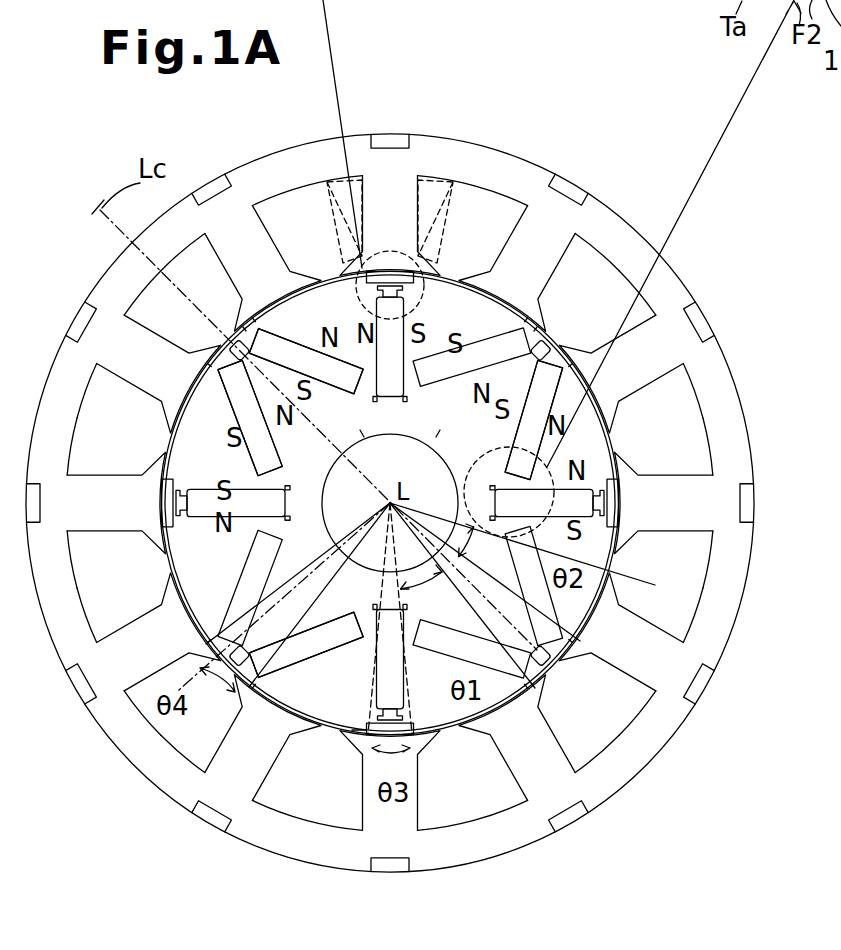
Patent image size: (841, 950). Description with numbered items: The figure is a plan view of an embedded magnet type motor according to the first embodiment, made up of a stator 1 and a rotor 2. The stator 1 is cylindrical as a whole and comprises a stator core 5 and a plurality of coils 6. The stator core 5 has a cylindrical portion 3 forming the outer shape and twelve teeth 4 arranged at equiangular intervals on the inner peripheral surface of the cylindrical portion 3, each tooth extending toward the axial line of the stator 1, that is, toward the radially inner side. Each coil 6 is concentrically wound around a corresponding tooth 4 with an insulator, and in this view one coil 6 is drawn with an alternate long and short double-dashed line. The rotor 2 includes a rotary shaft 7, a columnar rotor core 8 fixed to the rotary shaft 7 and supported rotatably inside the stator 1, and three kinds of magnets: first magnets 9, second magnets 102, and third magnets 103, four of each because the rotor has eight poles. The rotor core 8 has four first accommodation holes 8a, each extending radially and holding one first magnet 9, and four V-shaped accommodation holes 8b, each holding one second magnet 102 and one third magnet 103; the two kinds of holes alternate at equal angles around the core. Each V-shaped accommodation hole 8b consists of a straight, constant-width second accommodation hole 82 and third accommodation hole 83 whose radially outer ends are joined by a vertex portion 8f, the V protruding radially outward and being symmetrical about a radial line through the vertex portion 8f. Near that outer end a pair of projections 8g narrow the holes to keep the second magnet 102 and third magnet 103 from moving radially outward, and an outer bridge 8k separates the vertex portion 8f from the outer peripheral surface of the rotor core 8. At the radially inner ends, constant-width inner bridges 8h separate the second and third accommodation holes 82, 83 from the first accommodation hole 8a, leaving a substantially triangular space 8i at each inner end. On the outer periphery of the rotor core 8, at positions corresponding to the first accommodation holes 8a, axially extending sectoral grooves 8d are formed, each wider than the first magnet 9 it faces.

The stator 1 is at (700, 290).
The rotor 2 is at (610, 440).
The cylindrical portion 3 is at (738, 549).
The teeth 4 is at (392, 168).
The stator core 5 is at (505, 152).
The coil 6 is at (463, 186).
The rotary shaft 7 is at (326, 540).
The rotor core 8 is at (441, 687).
The first accommodation hole 8a is at (412, 293).
The V-shaped accommodation hole 8b is at (345, 386).
The groove 8d is at (355, 728).
The vertex portion 8f is at (237, 352).
The projection 8g is at (235, 318).
The inner bridge 8h is at (438, 430).
The space 8i is at (362, 430).
The outer bridge 8k is at (548, 350).
The first magnet 9 is at (368, 288).
The second accommodation hole 82 is at (240, 386).
The third accommodation hole 83 is at (303, 350).
The second magnet 102 is at (495, 312).
The third magnet 103 is at (258, 322).